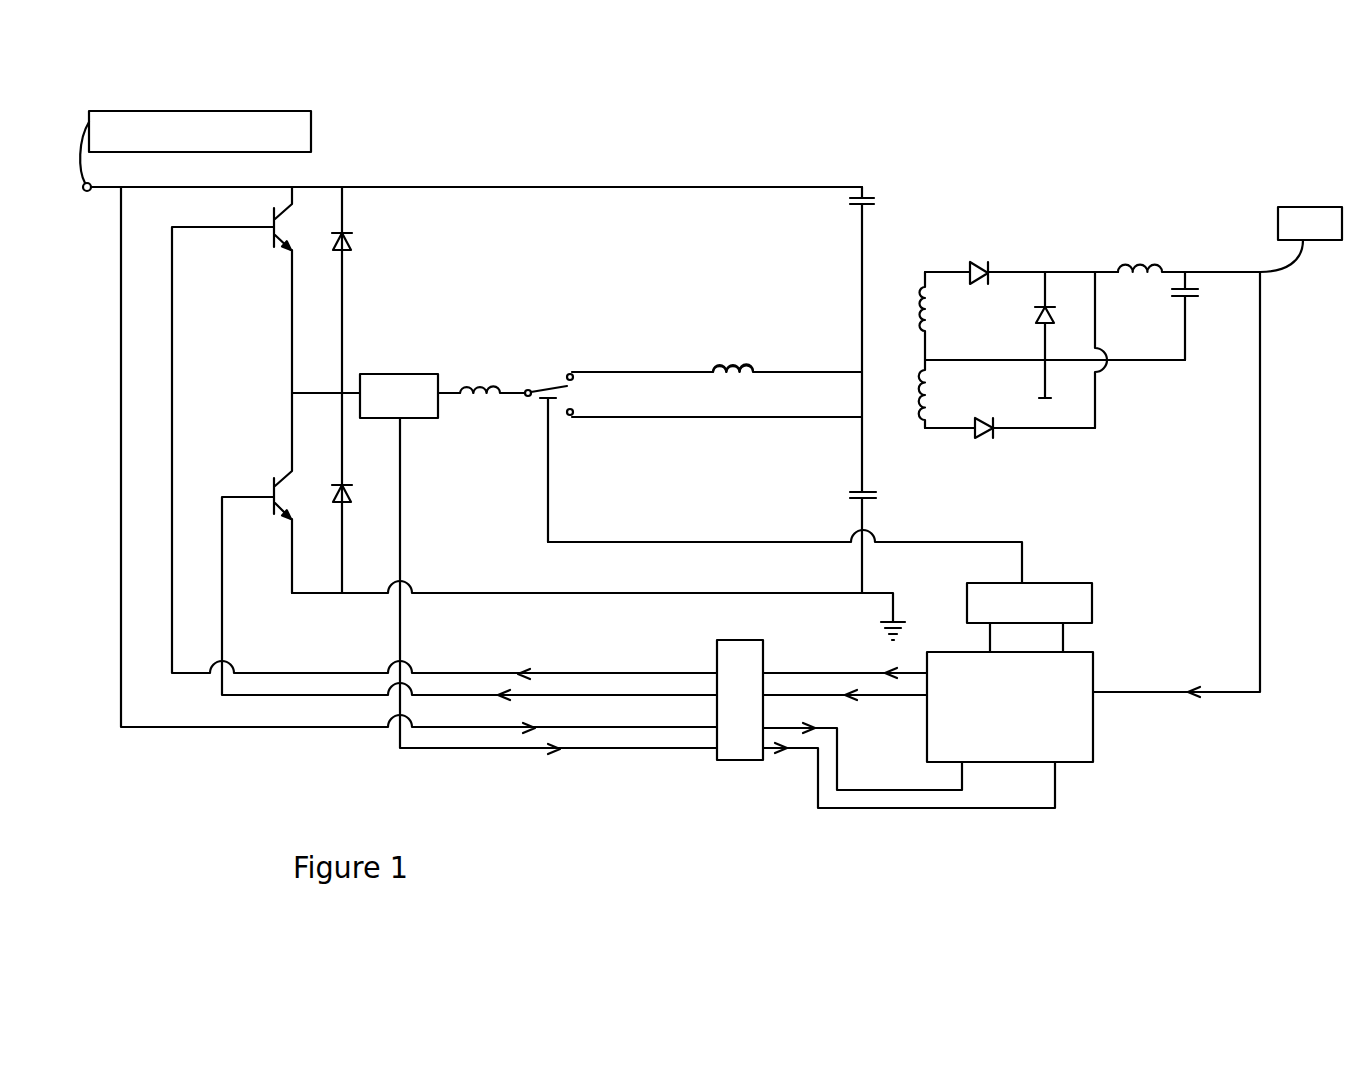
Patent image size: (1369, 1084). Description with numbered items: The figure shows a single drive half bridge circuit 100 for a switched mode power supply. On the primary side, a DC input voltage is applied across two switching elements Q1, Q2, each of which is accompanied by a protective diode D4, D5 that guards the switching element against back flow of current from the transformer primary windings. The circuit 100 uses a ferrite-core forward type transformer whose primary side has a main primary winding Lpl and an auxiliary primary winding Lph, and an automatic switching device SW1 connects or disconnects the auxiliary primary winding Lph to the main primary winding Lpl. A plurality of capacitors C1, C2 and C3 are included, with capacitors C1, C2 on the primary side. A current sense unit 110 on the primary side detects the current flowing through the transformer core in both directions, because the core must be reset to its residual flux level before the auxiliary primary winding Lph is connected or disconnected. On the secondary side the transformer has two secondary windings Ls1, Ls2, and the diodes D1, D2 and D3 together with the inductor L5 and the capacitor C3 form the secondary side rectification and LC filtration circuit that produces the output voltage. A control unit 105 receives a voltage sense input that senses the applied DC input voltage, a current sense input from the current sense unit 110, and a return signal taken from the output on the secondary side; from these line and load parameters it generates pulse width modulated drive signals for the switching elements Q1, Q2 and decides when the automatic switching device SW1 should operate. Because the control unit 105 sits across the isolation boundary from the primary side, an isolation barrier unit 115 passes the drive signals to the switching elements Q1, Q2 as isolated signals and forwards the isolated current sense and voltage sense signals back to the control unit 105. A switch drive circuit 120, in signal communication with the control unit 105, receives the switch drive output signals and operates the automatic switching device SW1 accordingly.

The single drive half bridge circuit 100 is at (1065, 150).
The control unit 105 is at (1081, 763).
The current sense unit 110 is at (384, 373).
The isolation barrier unit 115 is at (738, 762).
The switch drive circuit 120 is at (1093, 598).
The switching element Q1 is at (273, 218).
The switching element Q2 is at (273, 483).
The diode D4 is at (346, 250).
The diode D5 is at (346, 503).
The main primary winding Lpl is at (494, 388).
The auxiliary primary winding Lph is at (733, 367).
The automatic switching device SW1 is at (527, 412).
The capacitor C1 is at (867, 198).
The capacitor C2 is at (866, 498).
The capacitor C3 is at (1192, 299).
The secondary winding Ls1 is at (918, 297).
The secondary winding Ls2 is at (918, 397).
The diode D1 is at (989, 268).
The diode D2 is at (994, 432).
The diode D3 is at (1049, 324).
The inductor L5 is at (1156, 264).